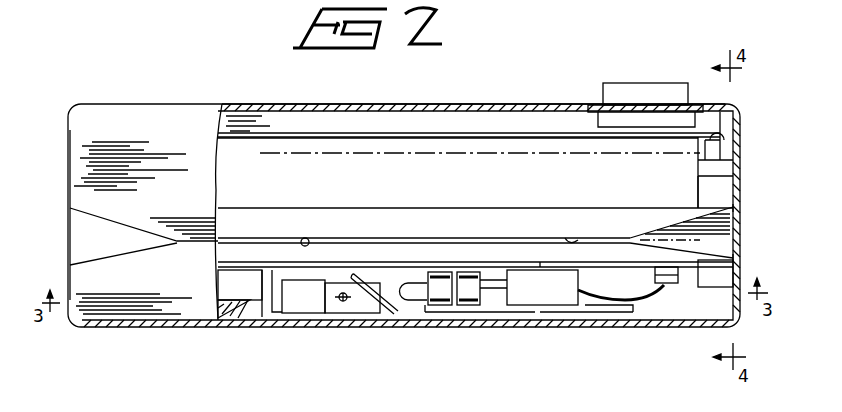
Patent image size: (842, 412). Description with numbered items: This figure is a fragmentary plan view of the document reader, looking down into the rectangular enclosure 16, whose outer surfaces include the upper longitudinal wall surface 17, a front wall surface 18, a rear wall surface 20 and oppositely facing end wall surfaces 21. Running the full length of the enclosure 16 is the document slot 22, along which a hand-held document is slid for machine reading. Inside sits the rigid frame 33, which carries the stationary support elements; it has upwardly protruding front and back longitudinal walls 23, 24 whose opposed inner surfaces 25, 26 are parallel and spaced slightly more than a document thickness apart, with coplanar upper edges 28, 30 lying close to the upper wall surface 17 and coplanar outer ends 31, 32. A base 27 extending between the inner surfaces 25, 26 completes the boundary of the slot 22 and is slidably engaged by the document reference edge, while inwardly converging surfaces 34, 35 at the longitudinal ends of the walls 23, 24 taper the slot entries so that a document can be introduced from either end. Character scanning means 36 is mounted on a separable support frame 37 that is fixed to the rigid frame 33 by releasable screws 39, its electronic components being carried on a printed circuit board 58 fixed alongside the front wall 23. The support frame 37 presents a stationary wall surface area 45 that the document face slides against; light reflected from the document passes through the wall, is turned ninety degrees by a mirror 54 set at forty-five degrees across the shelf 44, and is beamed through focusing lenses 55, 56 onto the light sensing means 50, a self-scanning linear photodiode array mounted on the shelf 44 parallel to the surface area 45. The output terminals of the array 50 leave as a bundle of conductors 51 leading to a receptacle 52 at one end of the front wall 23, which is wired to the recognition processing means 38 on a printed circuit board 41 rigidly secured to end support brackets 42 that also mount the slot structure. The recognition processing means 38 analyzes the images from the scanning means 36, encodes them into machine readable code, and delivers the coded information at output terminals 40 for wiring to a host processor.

The enclosure 16 is at (200, 106).
The upper longitudinal wall surface 17 is at (212, 171).
The front wall surface 18 is at (468, 322).
The rear wall surface 20 is at (520, 100).
The end wall surface 21 is at (72, 171).
The document slot 22 is at (307, 239).
The front longitudinal wall 23 is at (636, 258).
The back longitudinal wall 24 is at (562, 213).
The inner surface 25 is at (504, 244).
The inner surface 26 is at (573, 240).
The base 27 is at (718, 240).
The upper edge 28 is at (437, 245).
The upper edge 30 is at (476, 240).
The outer end 31 is at (734, 258).
The outer end 32 is at (734, 208).
The rigid frame 33 is at (722, 206).
The inwardly converging surface 34 is at (120, 255).
The inwardly converging surface 35 is at (102, 226).
The character scanning means 36 is at (380, 320).
The support frame 37 is at (308, 320).
The recognition processing means 38 is at (420, 158).
The releasable screws 39 is at (297, 205).
The output terminals 40 is at (632, 95).
The printed circuit board 41 is at (468, 134).
The end support brackets 42 is at (734, 150).
The shelf 44 is at (512, 312).
The stationary wall surface area 45 is at (381, 240).
The light sensing means 50 is at (552, 264).
The bundle of conductors 51 is at (636, 320).
The receptacle 52 is at (690, 285).
The mirror 54 is at (388, 320).
The focusing lens 55 is at (410, 286).
The focusing lens 56 is at (480, 318).
The printed circuit board 58 is at (218, 273).